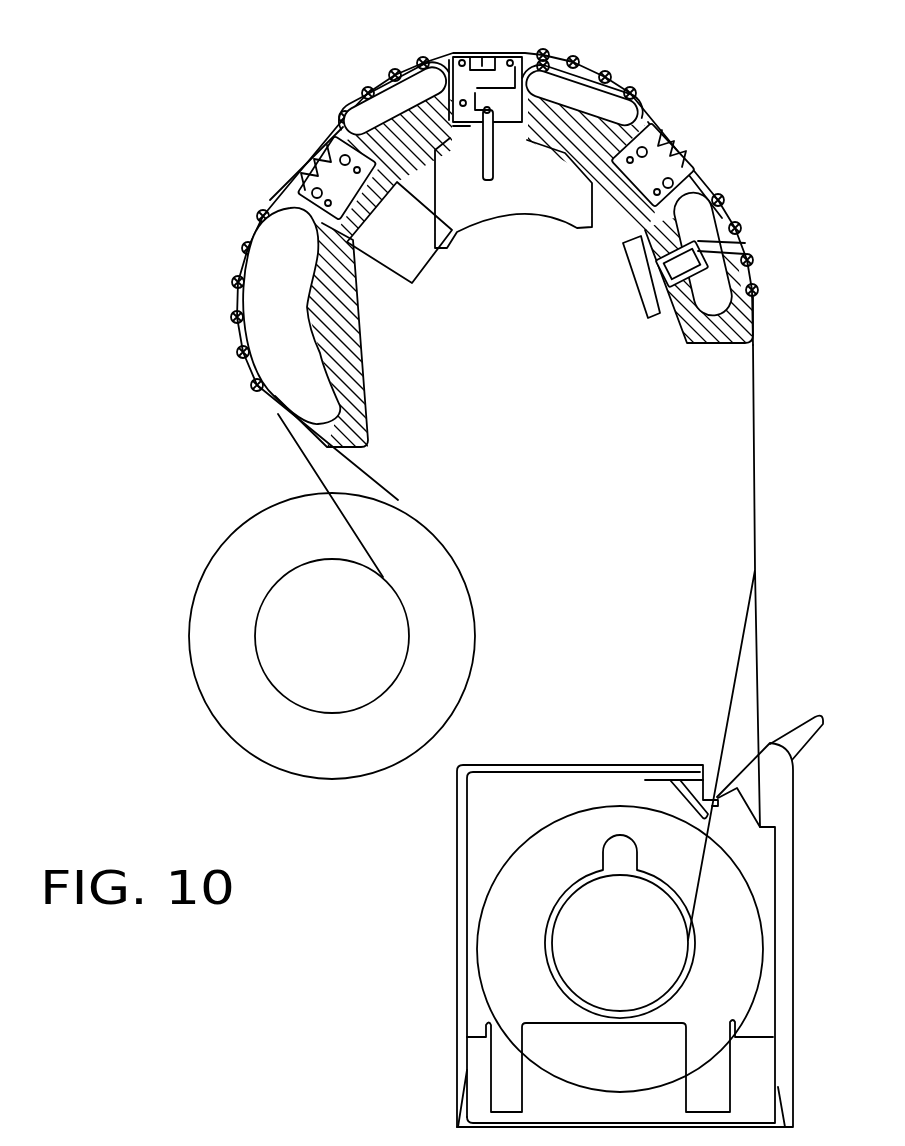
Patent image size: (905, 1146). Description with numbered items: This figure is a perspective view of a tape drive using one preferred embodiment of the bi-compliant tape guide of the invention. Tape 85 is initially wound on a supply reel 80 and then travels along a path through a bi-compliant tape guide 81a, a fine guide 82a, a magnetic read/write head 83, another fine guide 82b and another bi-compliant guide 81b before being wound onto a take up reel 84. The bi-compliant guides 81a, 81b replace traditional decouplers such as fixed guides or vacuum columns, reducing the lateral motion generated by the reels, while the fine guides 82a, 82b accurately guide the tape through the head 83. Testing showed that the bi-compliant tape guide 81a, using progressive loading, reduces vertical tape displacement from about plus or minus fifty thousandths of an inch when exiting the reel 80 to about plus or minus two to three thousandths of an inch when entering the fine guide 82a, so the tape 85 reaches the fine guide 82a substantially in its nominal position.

The supply reel 80 is at (736, 948).
The bi-compliant tape guide 81a is at (698, 231).
The bi-compliant guide 81b is at (278, 326).
The fine guide 82a is at (576, 92).
The fine guide 82b is at (378, 122).
The magnetic read/write head 83 is at (480, 46).
The take up reel 84 is at (302, 675).
The tape 85 is at (764, 550).